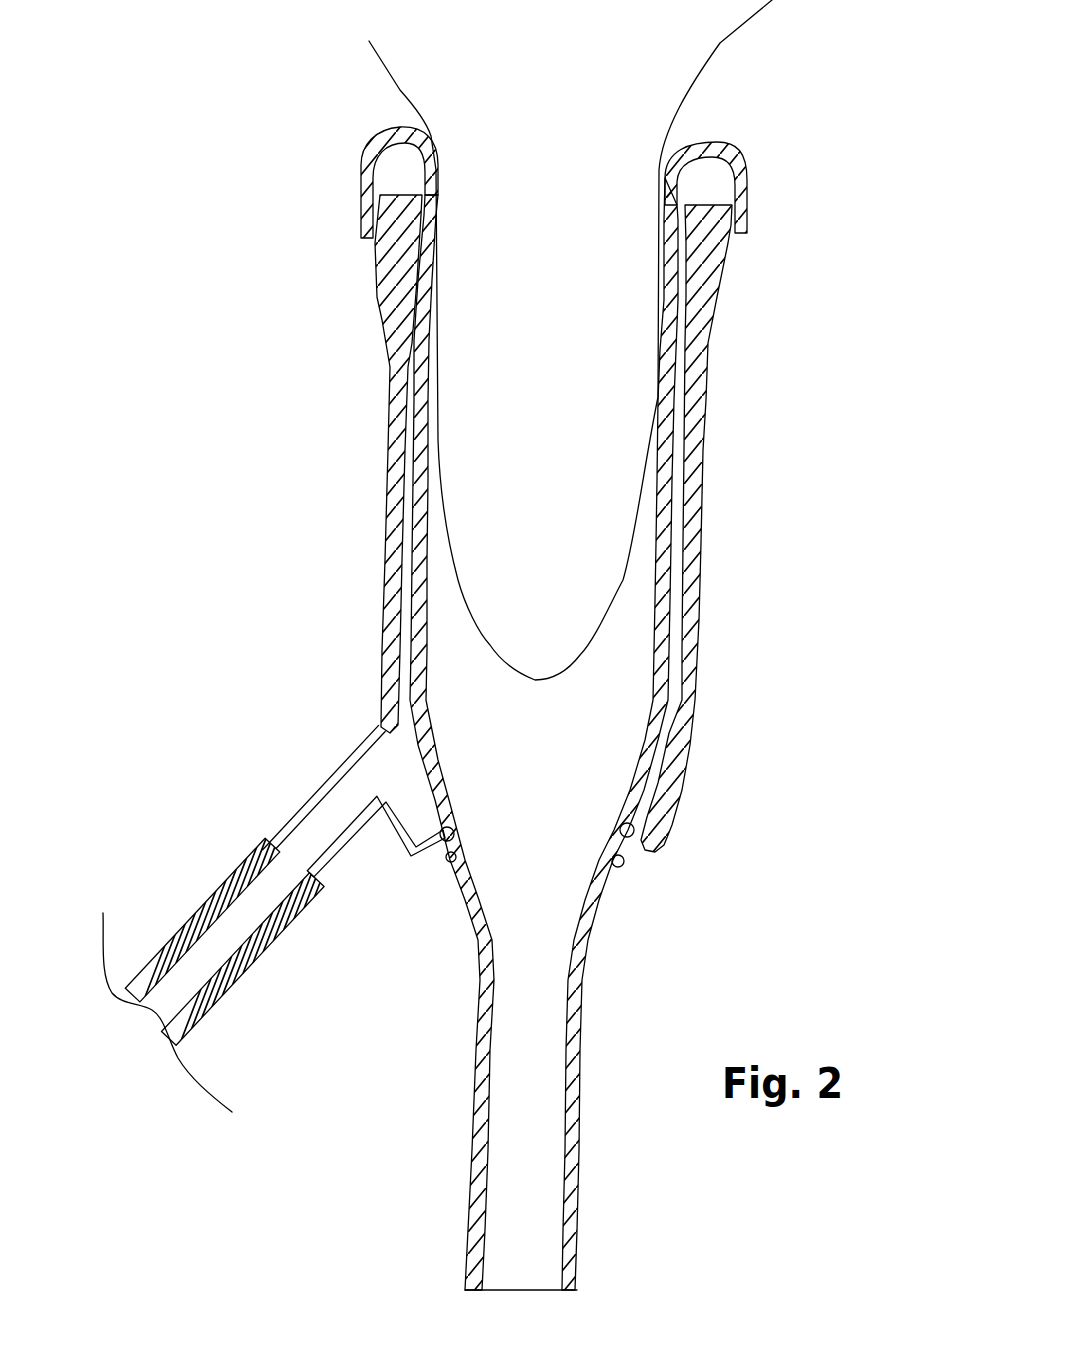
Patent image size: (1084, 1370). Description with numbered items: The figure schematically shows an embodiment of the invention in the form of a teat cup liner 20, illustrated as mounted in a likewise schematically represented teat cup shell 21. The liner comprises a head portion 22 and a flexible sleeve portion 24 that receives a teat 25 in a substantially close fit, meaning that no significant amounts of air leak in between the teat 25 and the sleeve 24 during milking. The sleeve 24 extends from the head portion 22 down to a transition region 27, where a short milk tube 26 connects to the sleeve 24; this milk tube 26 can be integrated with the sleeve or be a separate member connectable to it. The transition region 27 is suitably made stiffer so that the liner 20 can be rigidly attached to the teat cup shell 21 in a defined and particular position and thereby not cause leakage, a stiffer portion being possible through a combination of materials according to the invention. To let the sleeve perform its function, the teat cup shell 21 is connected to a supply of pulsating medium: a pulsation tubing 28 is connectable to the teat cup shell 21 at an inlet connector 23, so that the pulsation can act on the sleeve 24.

The liner 20 is at (815, 358).
The teat cup shell 21 is at (385, 573).
The head portion 22 is at (790, 160).
The inlet connector 23 is at (332, 800).
The flexible sleeve portion 24 is at (668, 497).
The teat 25 is at (566, 118).
The short milk tube 26 is at (578, 1013).
The transition region 27 is at (415, 925).
The pulsation tubing 28 is at (200, 913).